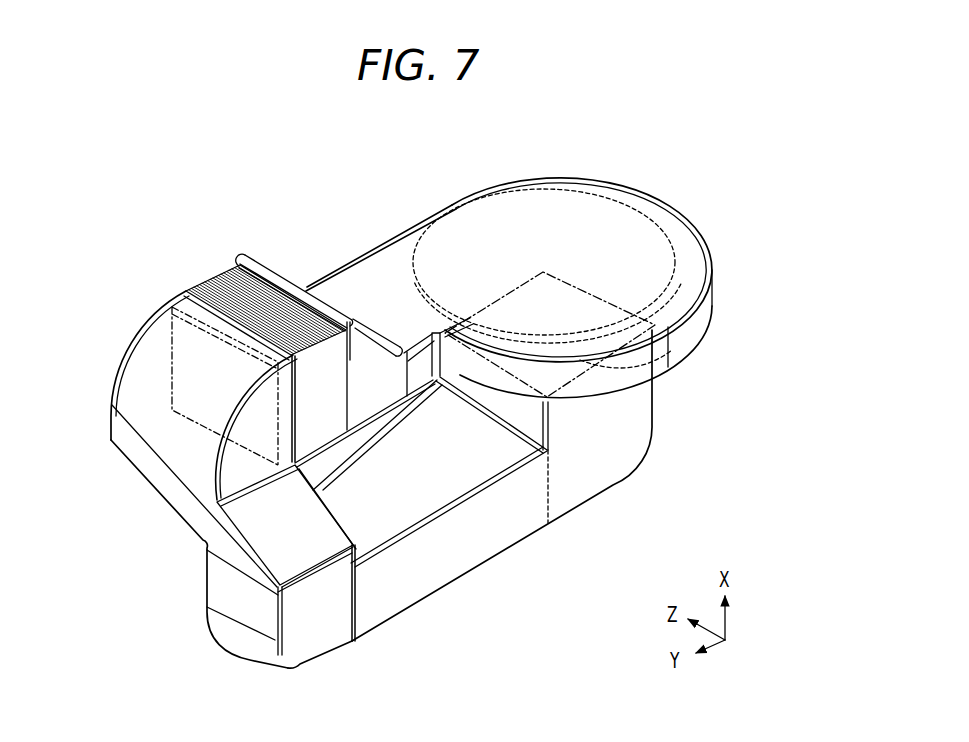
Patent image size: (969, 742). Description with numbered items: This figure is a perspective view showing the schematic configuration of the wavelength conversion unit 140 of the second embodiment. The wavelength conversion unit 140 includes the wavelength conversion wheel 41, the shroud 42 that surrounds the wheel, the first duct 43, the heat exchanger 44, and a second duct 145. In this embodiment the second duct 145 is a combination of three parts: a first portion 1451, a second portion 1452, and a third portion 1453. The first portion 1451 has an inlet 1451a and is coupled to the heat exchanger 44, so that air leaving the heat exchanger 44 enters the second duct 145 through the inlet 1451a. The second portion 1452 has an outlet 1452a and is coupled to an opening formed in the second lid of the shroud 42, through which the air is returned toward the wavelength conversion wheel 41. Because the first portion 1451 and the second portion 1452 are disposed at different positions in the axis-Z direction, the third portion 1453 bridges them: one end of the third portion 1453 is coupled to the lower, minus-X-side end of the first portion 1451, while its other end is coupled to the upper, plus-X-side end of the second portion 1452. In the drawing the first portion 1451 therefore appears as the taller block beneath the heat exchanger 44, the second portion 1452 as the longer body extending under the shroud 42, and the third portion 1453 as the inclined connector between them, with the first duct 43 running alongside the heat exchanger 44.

The wavelength conversion unit 140 is at (676, 185).
The shroud 42 is at (441, 190).
The wavelength conversion wheel 41 is at (577, 190).
The second duct 145 is at (130, 320).
The first portion 1451 is at (157, 328).
The inlet 1451a is at (170, 380).
The heat exchanger 44 is at (284, 278).
The first duct 43 is at (365, 322).
The second portion 1452 is at (440, 562).
The outlet 1452a is at (672, 352).
The third portion 1453 is at (243, 553).